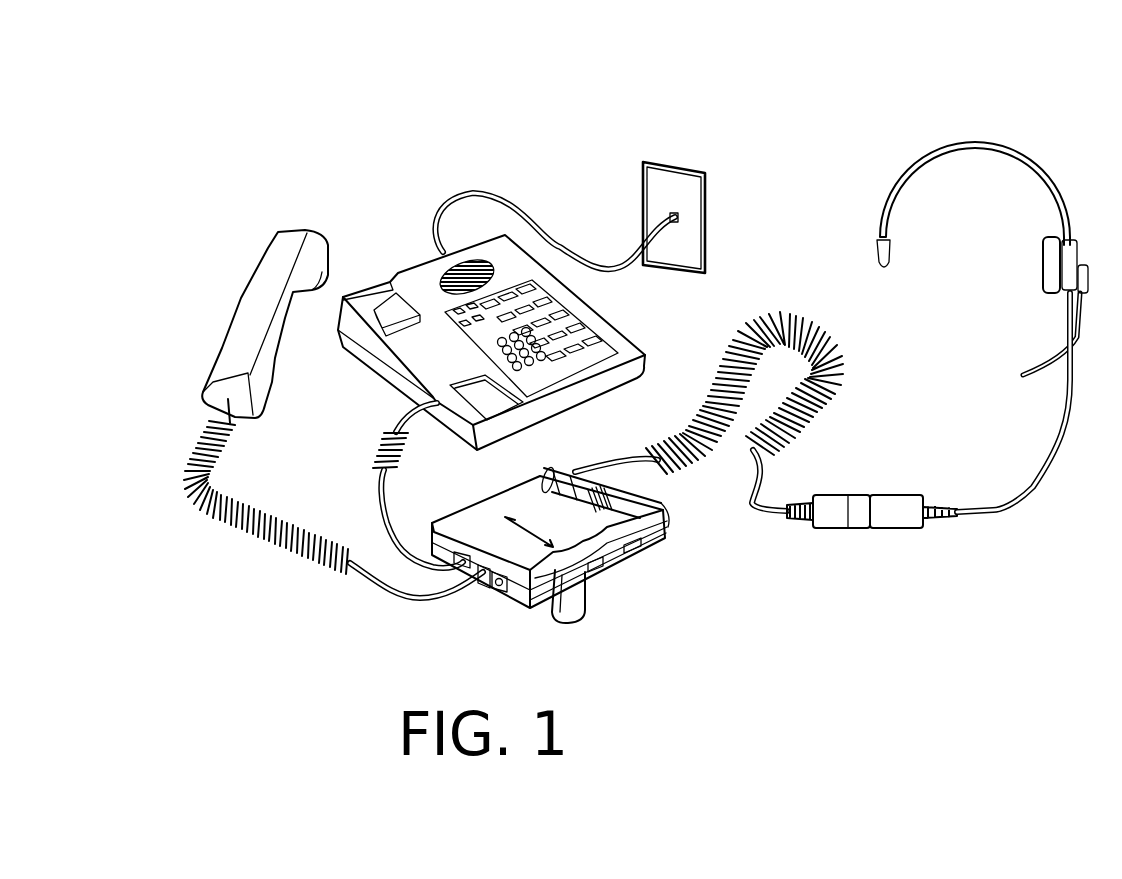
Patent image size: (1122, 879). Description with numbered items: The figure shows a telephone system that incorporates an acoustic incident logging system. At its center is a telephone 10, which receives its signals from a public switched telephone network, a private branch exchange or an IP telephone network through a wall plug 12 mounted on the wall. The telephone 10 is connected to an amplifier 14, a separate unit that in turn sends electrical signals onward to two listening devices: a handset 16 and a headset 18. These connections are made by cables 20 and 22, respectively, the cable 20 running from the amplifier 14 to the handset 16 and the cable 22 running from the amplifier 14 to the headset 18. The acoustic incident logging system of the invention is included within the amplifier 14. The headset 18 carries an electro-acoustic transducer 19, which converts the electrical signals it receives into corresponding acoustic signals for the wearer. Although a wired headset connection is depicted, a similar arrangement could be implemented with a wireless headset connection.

The telephone 10 is at (420, 265).
The wall plug 12 is at (673, 215).
The amplifier 14 is at (610, 567).
The handset 16 is at (263, 258).
The headset 18 is at (982, 299).
The electro-acoustic transducer 19 is at (1075, 252).
The cable 20 is at (293, 553).
The cable 22 is at (806, 318).